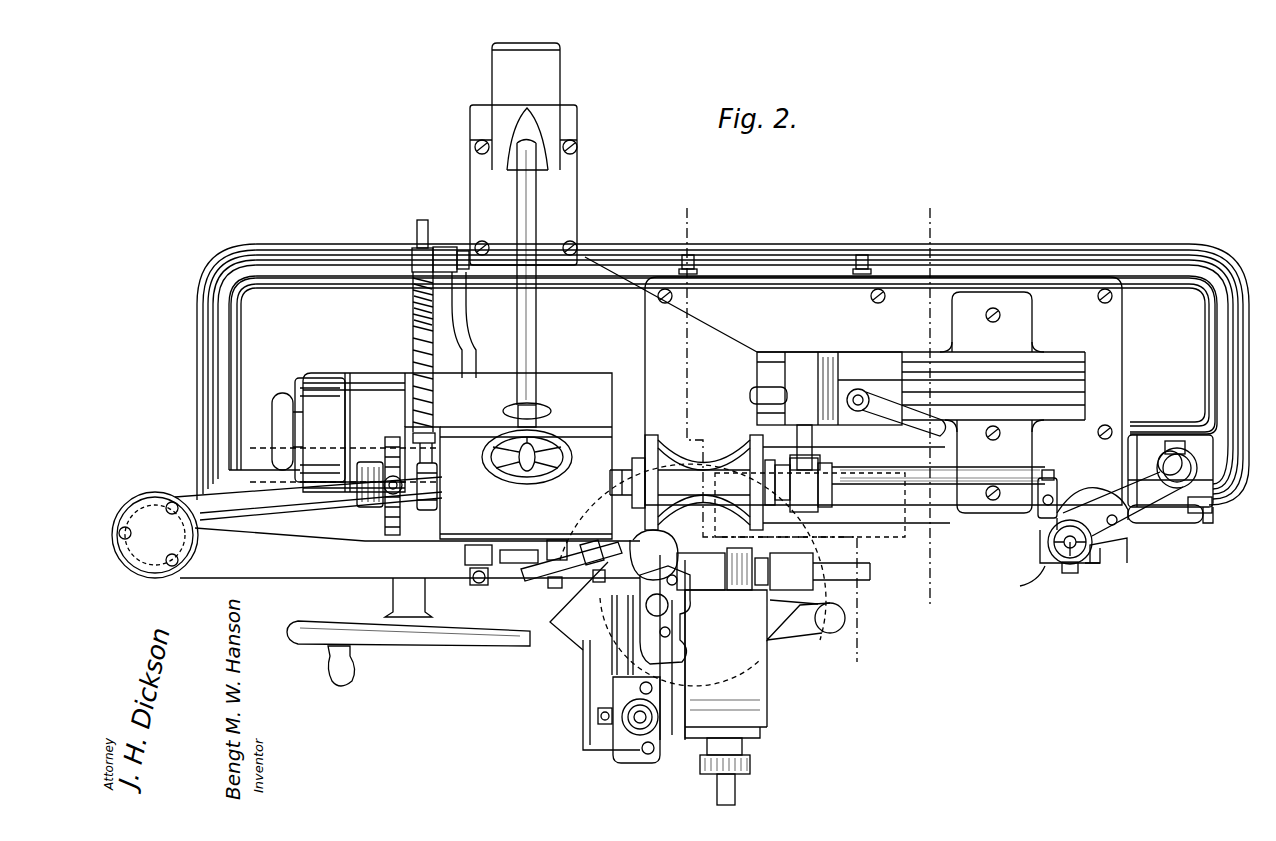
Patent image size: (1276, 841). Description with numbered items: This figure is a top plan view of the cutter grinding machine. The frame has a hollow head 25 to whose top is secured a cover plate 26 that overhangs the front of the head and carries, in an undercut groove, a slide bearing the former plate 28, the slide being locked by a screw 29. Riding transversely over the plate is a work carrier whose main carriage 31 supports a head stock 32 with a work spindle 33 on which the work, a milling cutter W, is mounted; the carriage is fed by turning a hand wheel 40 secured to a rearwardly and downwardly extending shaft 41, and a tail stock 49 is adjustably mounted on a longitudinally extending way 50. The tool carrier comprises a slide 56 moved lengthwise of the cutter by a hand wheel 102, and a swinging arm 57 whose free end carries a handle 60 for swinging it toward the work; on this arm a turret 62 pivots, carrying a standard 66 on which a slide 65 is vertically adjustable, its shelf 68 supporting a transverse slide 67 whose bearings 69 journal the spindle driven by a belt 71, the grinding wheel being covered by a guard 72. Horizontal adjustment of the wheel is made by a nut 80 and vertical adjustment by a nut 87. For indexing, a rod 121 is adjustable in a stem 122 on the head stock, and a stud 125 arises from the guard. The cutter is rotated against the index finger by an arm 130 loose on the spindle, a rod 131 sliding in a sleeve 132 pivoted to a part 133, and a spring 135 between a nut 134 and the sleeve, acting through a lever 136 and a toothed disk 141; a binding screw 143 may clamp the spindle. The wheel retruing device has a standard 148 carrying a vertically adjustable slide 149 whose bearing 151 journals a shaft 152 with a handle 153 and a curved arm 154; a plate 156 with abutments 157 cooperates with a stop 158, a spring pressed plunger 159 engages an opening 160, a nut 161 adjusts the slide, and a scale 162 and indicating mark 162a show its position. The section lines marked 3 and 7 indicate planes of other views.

The hollow head 25 is at (314, 290).
The cover plate 26 is at (1055, 292).
The former plate 28 is at (900, 545).
The screw 29 is at (690, 256).
The section line 3- 3 is at (771, 427).
The section line 7- 7 is at (927, 406).
The main carriage 31 is at (713, 343).
The head stock 32 is at (462, 545).
The work spindle 33 is at (621, 499).
The hand wheel 40 is at (488, 463).
The shaft 41 is at (527, 230).
The tail stock 49 is at (801, 358).
The longitudinally extending way 50 is at (1058, 358).
The slide 56 is at (200, 492).
The swinging arm 57 is at (356, 568).
The handle 60 is at (828, 633).
The turret 62 is at (568, 637).
The slide 65 is at (630, 752).
The standard 66 is at (595, 746).
The transverse slide 67 is at (758, 704).
The shelf 68 is at (678, 705).
The bearings 69 is at (803, 580).
The belt 71 is at (742, 592).
The guard 72 is at (640, 640).
The nut 80 is at (750, 763).
The nut 87 is at (630, 726).
The hand wheel 102 is at (408, 632).
The rod 121 is at (540, 570).
The stem 122 is at (590, 565).
The stud 125 is at (672, 606).
The arm 130 is at (423, 512).
The rod 131 is at (417, 350).
The sleeve 132 is at (425, 255).
The part 133 is at (465, 358).
The nut 134 is at (418, 433).
The spring 135 is at (415, 318).
The lever 136 is at (380, 505).
The disk 141 is at (386, 437).
The binding screw 143 is at (481, 589).
The standard 148 is at (1195, 450).
The slide 149 is at (1212, 502).
The vertical bearing 151 is at (1090, 566).
The shaft 152 is at (1068, 547).
The handle 153 is at (1147, 496).
The curved arm 154 is at (1118, 557).
The plate 156 is at (1040, 528).
The abutments 157 is at (1060, 514).
The stop 158 is at (1068, 573).
The spring pressed plunger 159 is at (1050, 496).
The opening 160 is at (1112, 526).
The nut 161 is at (1199, 476).
The scale 162 is at (1216, 512).
The indicating mark 162a is at (1187, 526).
The milling cutter W is at (710, 453).